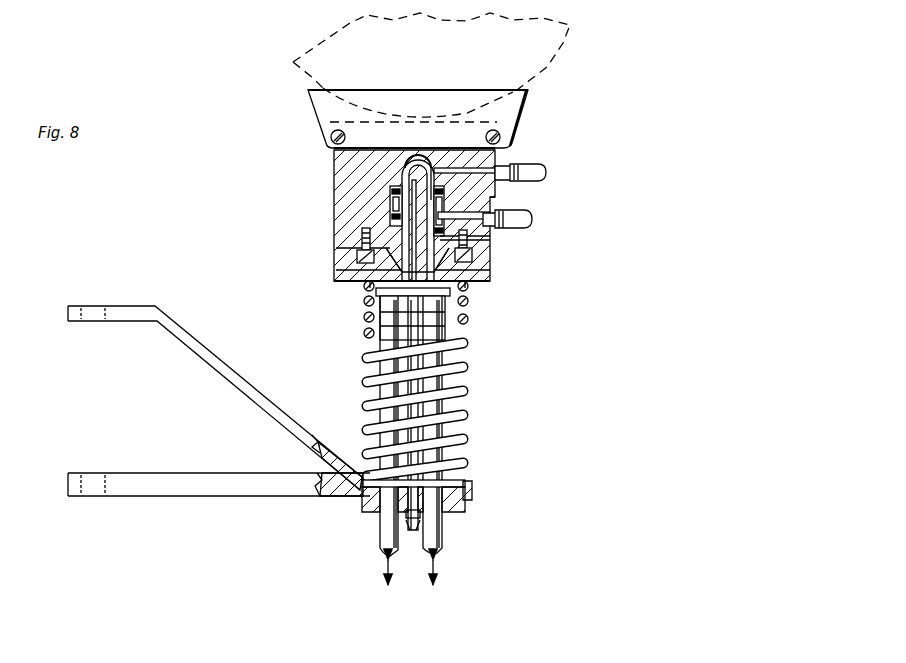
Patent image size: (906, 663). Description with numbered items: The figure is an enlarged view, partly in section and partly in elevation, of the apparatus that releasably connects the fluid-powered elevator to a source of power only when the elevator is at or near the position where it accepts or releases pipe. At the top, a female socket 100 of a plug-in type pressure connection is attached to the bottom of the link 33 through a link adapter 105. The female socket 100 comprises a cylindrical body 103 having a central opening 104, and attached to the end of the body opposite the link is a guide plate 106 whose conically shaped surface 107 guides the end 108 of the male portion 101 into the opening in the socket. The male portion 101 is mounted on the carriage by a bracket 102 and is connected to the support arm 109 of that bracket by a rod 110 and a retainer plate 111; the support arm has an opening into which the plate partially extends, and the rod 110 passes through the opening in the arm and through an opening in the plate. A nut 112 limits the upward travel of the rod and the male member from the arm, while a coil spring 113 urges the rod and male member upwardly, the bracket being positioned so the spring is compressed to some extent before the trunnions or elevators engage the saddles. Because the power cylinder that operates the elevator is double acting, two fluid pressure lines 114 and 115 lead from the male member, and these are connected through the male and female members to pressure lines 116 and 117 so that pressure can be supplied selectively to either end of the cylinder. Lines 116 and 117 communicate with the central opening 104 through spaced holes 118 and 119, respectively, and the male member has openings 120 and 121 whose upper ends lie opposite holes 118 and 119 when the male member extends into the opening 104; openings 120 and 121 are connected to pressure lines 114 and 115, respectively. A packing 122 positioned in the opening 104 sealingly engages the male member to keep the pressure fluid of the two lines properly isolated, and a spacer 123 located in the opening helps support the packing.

The link 33 is at (545, 73).
The female socket 100 is at (331, 175).
The male portion 101 is at (475, 312).
The bracket 102 is at (189, 303).
The cylindrical body 103 is at (330, 155).
The central opening 104 is at (401, 153).
The link adapter 105 is at (312, 112).
The guide plate 106 is at (356, 254).
The conically shaped surface 107 is at (372, 276).
The end of male member 108 is at (414, 150).
The support arm 109 is at (208, 497).
The rod 110 is at (380, 318).
The retainer plate 111 is at (362, 504).
The nut 112 is at (418, 513).
The coil spring 113 is at (467, 370).
The fluid pressure line 114 is at (382, 524).
The fluid pressure line 115 is at (442, 540).
The pressure line 116 is at (533, 173).
The pressure line 117 is at (513, 220).
The hole 118 is at (462, 150).
The hole 119 is at (497, 233).
The opening 120 is at (388, 256).
The opening 121 is at (472, 280).
The packing 122 is at (392, 193).
The spacer 123 is at (500, 197).